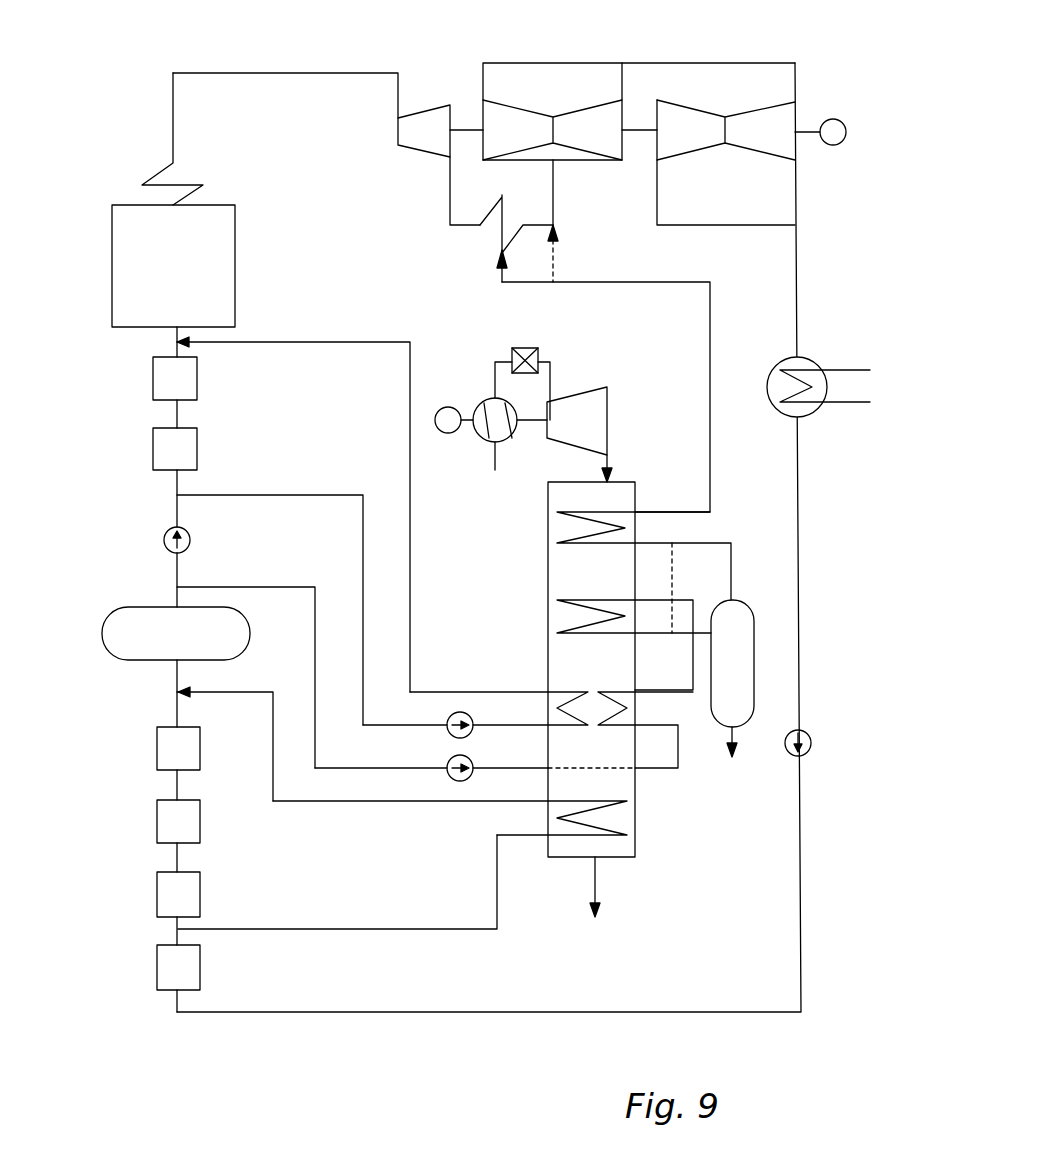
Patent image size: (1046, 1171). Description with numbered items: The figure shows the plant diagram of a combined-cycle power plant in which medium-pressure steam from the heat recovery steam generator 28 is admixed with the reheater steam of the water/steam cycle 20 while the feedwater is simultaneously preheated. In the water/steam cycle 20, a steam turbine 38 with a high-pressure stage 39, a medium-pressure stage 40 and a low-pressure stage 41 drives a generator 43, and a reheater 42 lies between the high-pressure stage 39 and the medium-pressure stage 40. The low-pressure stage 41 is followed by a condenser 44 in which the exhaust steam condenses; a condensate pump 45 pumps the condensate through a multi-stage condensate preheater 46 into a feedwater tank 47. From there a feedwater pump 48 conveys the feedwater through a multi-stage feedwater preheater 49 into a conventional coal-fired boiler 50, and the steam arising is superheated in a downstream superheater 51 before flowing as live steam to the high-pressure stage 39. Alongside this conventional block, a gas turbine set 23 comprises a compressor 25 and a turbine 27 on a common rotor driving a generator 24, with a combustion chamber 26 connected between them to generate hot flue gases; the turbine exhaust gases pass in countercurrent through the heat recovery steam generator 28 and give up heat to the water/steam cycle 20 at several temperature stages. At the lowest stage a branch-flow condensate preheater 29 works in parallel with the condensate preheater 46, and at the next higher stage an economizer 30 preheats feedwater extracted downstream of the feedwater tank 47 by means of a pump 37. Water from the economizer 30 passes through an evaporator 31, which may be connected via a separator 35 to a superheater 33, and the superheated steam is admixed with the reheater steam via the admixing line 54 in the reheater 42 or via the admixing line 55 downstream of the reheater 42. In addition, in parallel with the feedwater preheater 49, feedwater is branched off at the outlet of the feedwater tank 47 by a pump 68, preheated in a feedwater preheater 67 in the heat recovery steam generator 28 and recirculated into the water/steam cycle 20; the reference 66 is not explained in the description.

The water/steam cycle 20 is at (802, 952).
The gas turbine set 23 is at (388, 437).
The generator 24 is at (435, 413).
The compressor 25 is at (490, 437).
The combustion chamber 26 is at (523, 347).
The turbine 27 is at (597, 427).
The heat recovery steam generator 28 is at (568, 860).
The branch-flow condensate preheater 29 is at (635, 842).
The economizer 30 is at (635, 725).
The evaporator 31 is at (548, 602).
The superheater 33 is at (548, 537).
The separator 35 is at (740, 680).
The pump 37 is at (462, 780).
The steam turbine 38 is at (808, 87).
The high-pressure stage 39 is at (441, 122).
The medium-pressure stage 40 is at (530, 120).
The low-pressure stage 41 is at (760, 122).
The reheater 42 is at (497, 232).
The generator 43 is at (832, 137).
The condenser 44 is at (803, 408).
The condensate pump 45 is at (812, 743).
The condensate preheater 46 is at (127, 850).
The feedwater tank 47 is at (142, 652).
The feedwater pump 48 is at (160, 543).
The feedwater preheater 49 is at (130, 418).
The boiler 50 is at (188, 283).
The superheater 51 is at (142, 185).
The admixing line 54 is at (528, 282).
The admixing line 55 is at (557, 257).
The steam power plant 66 is at (356, 303).
The feedwater preheater 67 is at (548, 708).
The pump 68 is at (468, 713).